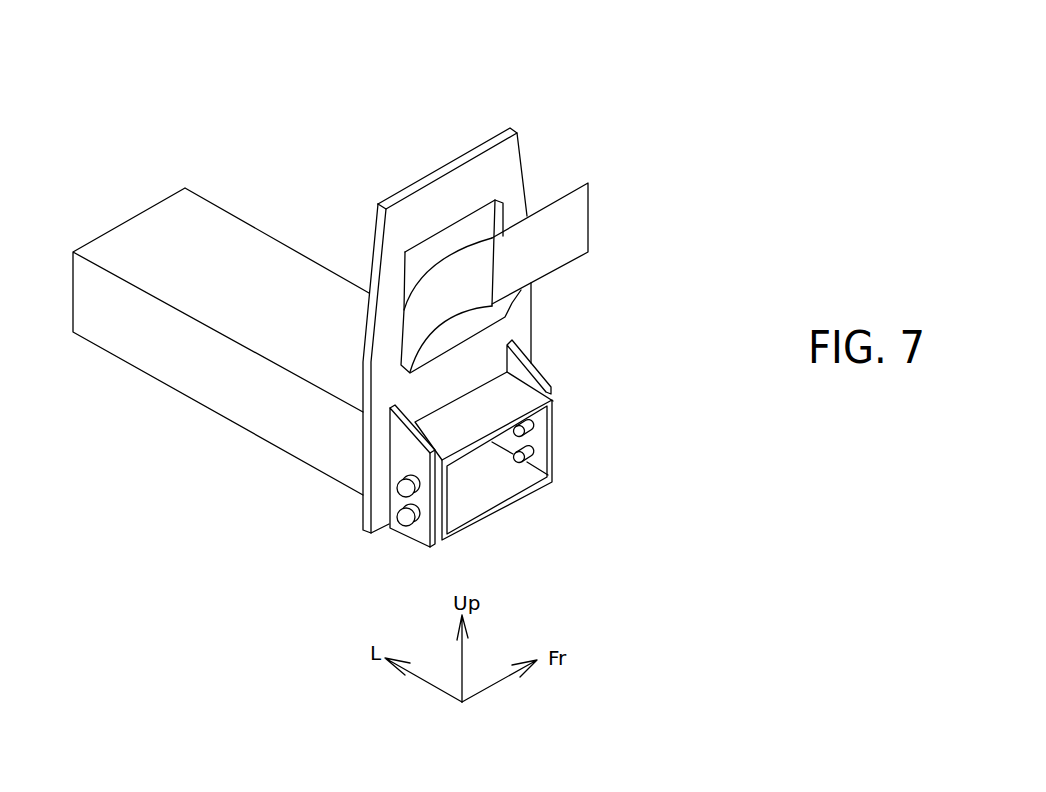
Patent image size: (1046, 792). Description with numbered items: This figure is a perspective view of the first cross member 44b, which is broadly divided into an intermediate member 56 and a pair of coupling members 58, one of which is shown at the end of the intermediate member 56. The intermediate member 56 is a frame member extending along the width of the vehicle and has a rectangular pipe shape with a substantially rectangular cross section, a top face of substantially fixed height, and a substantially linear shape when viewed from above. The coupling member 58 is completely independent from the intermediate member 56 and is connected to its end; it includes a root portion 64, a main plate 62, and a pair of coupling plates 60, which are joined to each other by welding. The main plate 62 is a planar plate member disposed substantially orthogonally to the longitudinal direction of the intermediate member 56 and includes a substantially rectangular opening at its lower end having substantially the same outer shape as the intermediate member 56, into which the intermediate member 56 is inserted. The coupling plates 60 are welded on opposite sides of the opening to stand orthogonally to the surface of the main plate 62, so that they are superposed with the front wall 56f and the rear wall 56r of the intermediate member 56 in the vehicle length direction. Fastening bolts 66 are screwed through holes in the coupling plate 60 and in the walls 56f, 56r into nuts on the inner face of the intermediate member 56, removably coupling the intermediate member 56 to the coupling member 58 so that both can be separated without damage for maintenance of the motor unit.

The first cross member 44b is at (326, 68).
The intermediate member 56 is at (247, 252).
The rear wall 56r is at (332, 462).
The front wall 56f is at (552, 463).
The coupling member 58 is at (611, 294).
The coupling plate 60 is at (536, 364).
The main plate 62 is at (513, 175).
The root portion 64 is at (590, 217).
The fastening bolt 66 is at (405, 490).